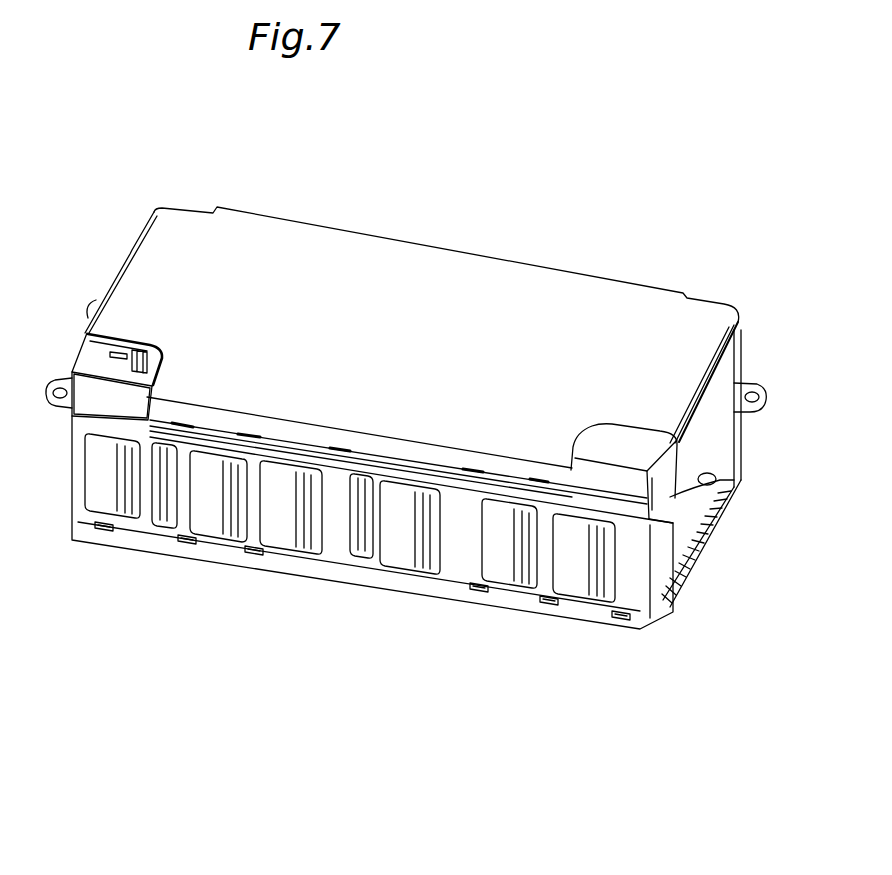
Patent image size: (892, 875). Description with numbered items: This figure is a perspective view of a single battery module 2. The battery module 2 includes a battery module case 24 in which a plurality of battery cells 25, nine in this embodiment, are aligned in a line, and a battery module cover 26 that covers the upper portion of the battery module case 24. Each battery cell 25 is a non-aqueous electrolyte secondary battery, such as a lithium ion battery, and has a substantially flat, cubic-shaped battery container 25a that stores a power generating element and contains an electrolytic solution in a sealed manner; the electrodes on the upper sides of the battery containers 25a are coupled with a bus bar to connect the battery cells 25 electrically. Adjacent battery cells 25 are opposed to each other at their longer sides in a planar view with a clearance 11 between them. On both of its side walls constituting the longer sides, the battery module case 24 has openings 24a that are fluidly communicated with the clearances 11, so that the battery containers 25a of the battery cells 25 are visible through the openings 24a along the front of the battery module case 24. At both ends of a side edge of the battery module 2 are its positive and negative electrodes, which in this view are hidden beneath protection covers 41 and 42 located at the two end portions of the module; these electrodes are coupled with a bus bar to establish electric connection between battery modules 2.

The battery module 2 is at (686, 230).
The clearance 11 is at (150, 440).
The battery module case 24 is at (74, 492).
The opening 24a is at (120, 502).
The battery cell 25 is at (127, 522).
The battery container 25a is at (362, 570).
The battery module cover 26 is at (156, 226).
The protection cover 41 is at (658, 493).
The protection cover 42 is at (88, 400).